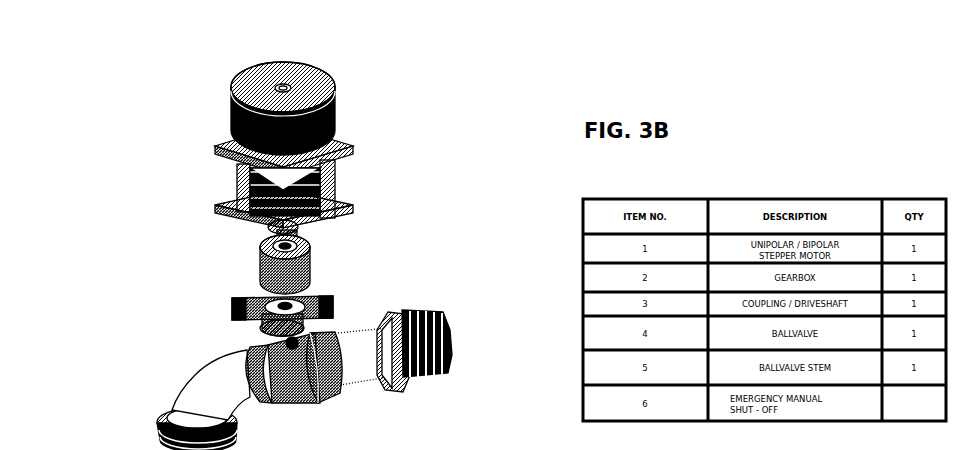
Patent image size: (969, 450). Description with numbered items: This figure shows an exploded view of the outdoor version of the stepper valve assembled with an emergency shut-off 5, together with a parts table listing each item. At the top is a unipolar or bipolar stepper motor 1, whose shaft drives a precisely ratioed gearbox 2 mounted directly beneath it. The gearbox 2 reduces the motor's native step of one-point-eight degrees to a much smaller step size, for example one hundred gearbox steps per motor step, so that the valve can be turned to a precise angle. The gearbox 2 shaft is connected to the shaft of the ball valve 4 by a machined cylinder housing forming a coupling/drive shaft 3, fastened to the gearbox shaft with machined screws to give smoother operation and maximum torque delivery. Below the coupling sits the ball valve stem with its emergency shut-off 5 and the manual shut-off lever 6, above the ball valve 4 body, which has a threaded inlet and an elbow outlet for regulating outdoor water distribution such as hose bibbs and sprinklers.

The unipolar or bipolar stepper motor 1 is at (227, 120).
The gearbox 2 is at (350, 190).
The coupling/drive shaft 3 is at (255, 270).
The ball valve 4 is at (350, 330).
The emergency shut-off 5 is at (250, 293).
The emergency manual shut-off 6 is at (237, 317).